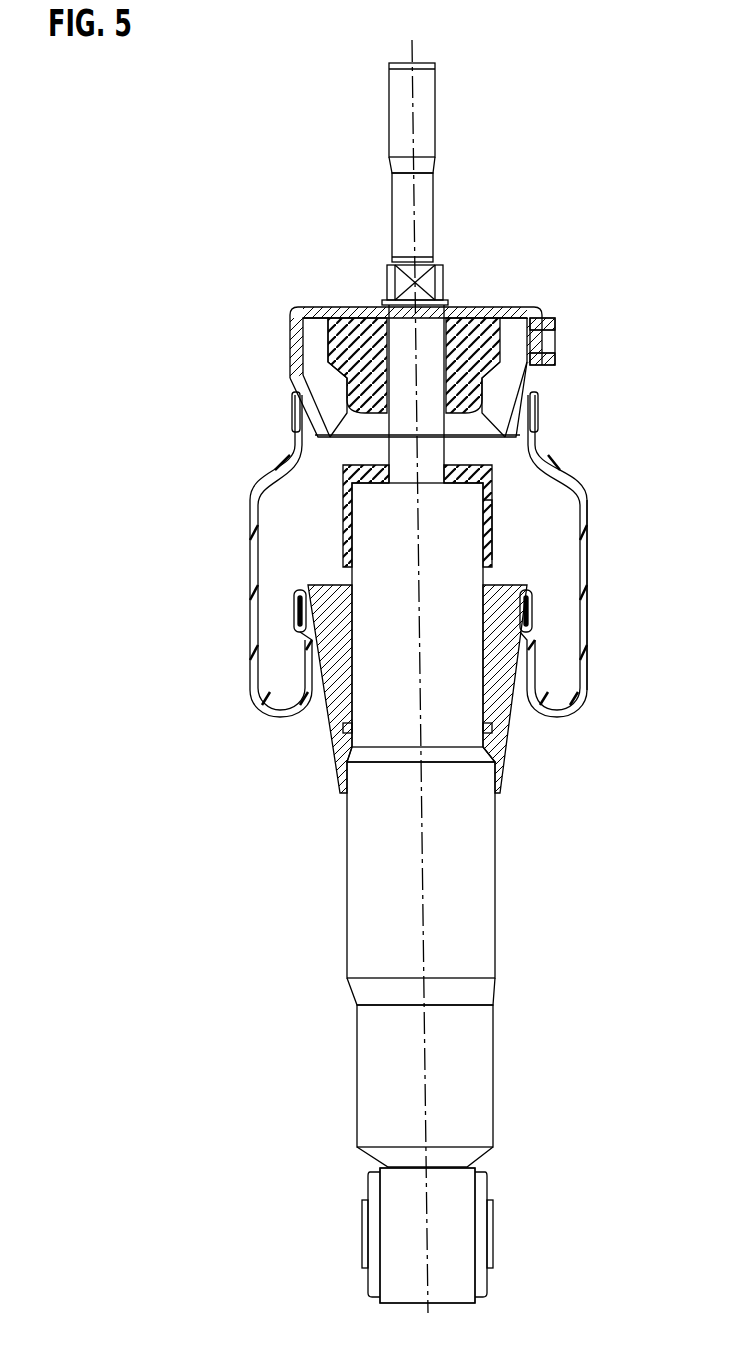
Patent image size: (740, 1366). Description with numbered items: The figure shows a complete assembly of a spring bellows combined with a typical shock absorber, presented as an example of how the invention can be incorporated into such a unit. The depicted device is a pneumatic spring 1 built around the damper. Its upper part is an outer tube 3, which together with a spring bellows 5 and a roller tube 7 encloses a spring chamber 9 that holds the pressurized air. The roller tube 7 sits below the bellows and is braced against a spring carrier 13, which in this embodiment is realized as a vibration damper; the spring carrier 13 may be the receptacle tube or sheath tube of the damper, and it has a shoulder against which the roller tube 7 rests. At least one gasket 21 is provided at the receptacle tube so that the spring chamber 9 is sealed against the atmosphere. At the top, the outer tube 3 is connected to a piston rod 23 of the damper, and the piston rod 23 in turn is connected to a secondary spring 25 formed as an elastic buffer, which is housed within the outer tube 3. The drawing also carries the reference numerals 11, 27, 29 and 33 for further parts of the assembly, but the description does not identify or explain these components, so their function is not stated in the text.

The pneumatic spring 1 is at (280, 868).
The outer tube 3 is at (505, 310).
The spring bellows 5 is at (592, 518).
The roller tube 7 is at (500, 770).
The spring chamber 9 is at (522, 458).
The air fitting 11 is at (540, 340).
The spring carrier 13 is at (498, 816).
The gasket 21 is at (492, 728).
The piston rod 23 is at (437, 235).
The secondary spring 25 is at (478, 372).
The collar gap 27 is at (508, 530).
The guide collar 29 is at (356, 452).
The clamp ring 33 is at (293, 408).